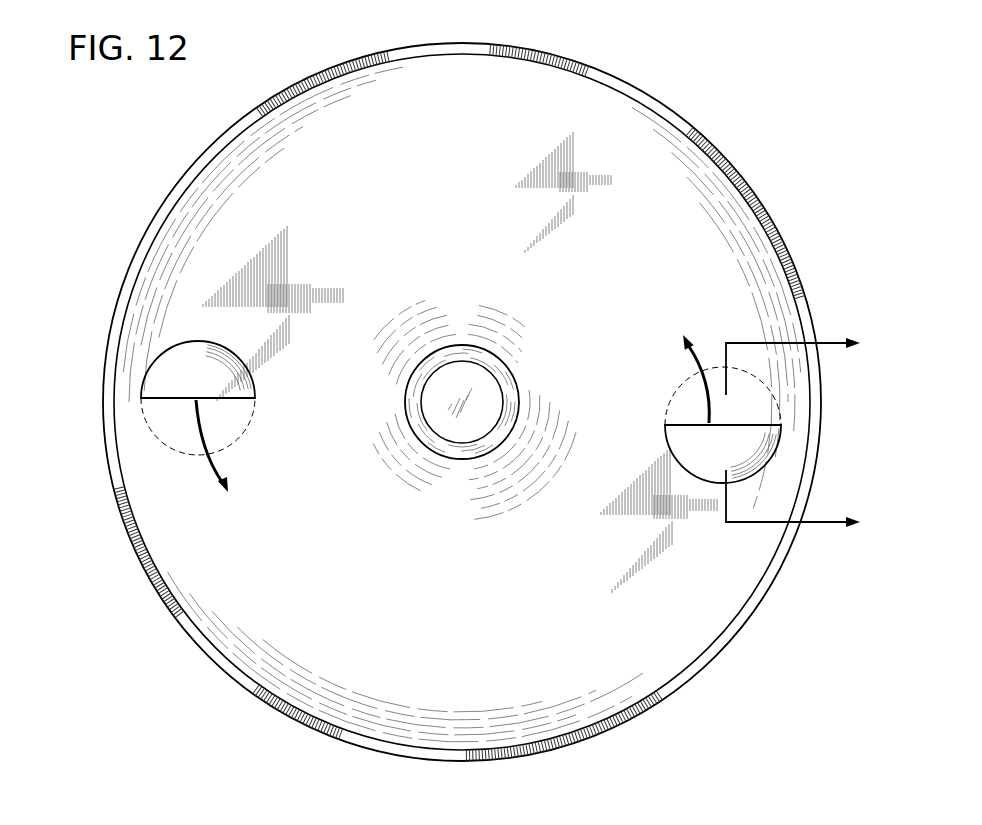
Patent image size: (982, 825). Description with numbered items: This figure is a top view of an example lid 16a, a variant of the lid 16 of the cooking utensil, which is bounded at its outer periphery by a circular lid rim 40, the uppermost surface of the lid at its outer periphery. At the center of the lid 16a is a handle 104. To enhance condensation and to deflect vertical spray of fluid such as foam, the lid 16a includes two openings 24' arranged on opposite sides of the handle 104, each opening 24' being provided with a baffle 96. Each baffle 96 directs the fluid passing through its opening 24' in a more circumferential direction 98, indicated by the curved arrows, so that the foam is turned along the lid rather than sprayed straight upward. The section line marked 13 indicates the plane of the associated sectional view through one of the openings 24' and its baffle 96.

The lid 16a is at (797, 162).
The lid rim 40 is at (150, 232).
The handle 104 is at (517, 378).
The baffle 96 is at (183, 362).
The opening 24' is at (513, 425).
The circumferential direction 98 is at (206, 463).
The section line 13 is at (808, 434).
The lid 16 is at (772, 822).